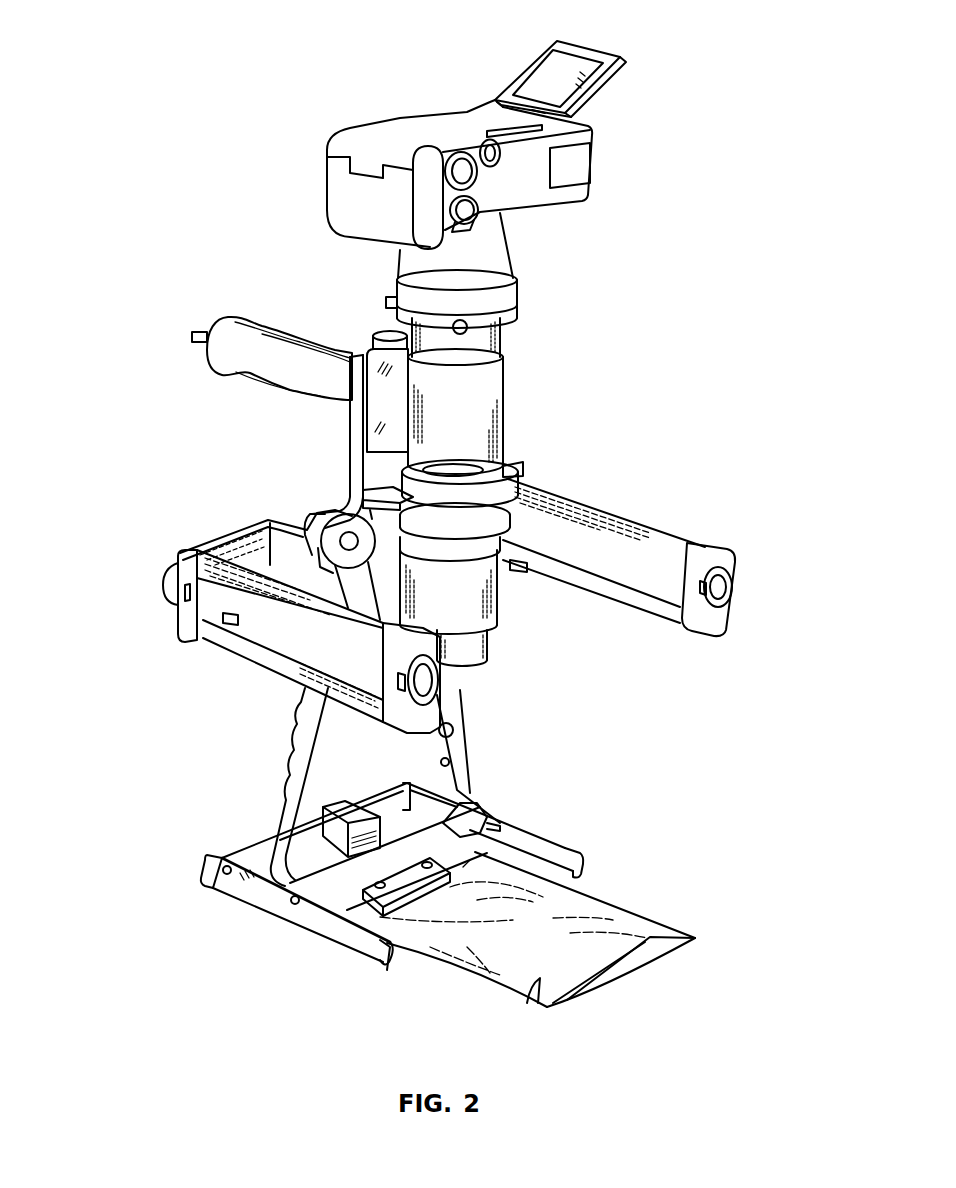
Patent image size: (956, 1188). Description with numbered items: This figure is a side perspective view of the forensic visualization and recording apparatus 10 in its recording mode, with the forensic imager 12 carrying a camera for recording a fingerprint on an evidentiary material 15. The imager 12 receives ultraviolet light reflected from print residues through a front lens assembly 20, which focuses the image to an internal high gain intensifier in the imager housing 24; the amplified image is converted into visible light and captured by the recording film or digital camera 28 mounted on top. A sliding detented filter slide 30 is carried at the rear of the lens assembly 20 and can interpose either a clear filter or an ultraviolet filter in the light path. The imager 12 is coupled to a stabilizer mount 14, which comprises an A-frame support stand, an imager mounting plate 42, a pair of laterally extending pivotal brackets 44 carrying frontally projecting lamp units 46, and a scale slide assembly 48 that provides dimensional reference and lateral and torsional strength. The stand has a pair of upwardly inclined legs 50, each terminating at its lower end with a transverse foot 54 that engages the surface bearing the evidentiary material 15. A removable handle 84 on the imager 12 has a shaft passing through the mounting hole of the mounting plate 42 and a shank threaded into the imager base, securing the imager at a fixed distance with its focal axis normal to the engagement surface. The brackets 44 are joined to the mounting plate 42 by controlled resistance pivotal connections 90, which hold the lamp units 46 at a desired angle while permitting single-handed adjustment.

The forensic visualization and recording apparatus 10 is at (699, 308).
The forensic imager 12 is at (502, 339).
The stabilizer mount 14 is at (205, 870).
The evidentiary material 15 is at (637, 923).
The front lens assembly 20 is at (490, 630).
The imager housing 24 is at (503, 378).
The digital camera 28 is at (453, 235).
The filter slide 30 is at (503, 470).
The imager mounting plate 42 is at (357, 435).
The pivotal brackets 44 is at (253, 527).
The lamp units 46 is at (285, 643).
The scale slide assembly 48 is at (322, 807).
The legs 50 is at (298, 729).
The feet 54 is at (267, 900).
The removable handle 84 is at (283, 340).
The pivotal connections 90 is at (327, 513).